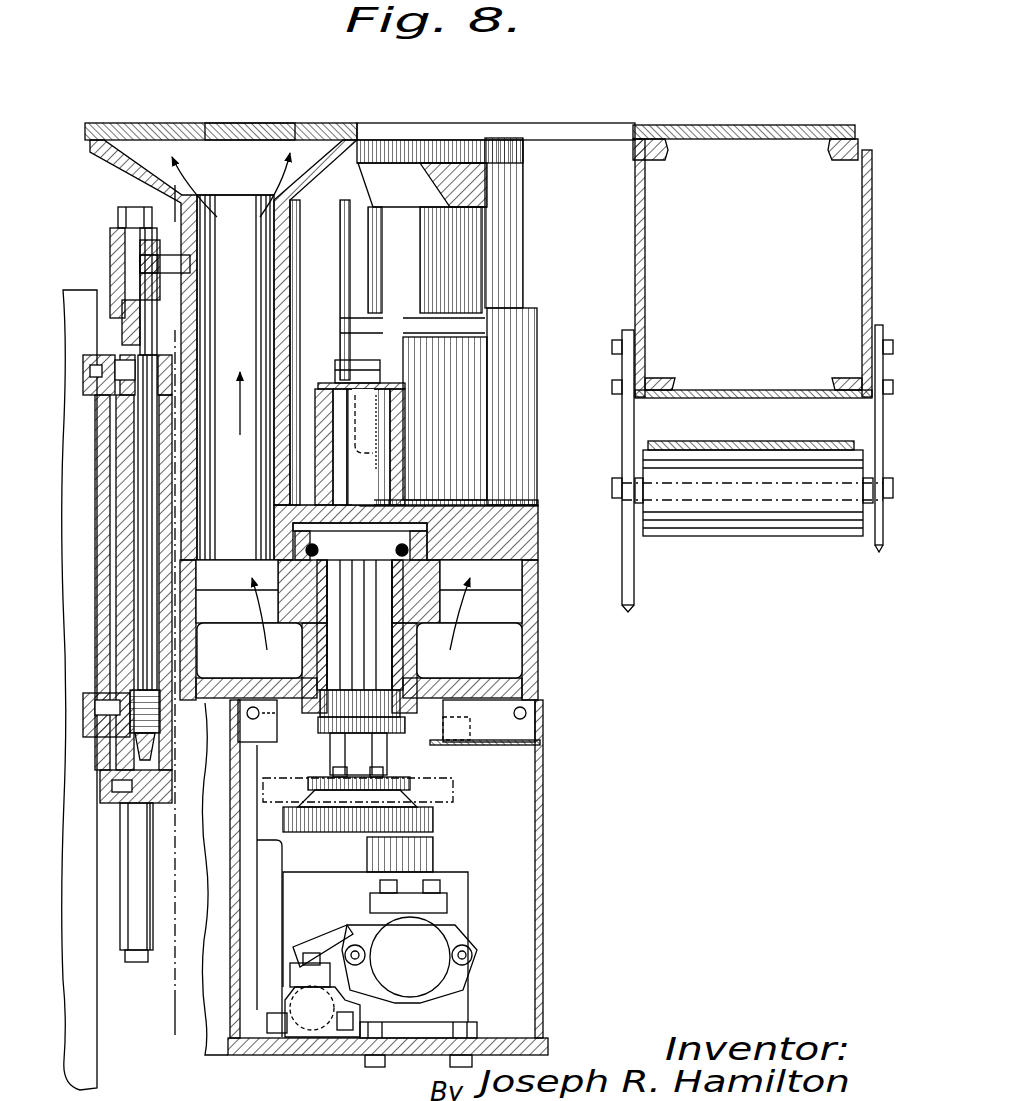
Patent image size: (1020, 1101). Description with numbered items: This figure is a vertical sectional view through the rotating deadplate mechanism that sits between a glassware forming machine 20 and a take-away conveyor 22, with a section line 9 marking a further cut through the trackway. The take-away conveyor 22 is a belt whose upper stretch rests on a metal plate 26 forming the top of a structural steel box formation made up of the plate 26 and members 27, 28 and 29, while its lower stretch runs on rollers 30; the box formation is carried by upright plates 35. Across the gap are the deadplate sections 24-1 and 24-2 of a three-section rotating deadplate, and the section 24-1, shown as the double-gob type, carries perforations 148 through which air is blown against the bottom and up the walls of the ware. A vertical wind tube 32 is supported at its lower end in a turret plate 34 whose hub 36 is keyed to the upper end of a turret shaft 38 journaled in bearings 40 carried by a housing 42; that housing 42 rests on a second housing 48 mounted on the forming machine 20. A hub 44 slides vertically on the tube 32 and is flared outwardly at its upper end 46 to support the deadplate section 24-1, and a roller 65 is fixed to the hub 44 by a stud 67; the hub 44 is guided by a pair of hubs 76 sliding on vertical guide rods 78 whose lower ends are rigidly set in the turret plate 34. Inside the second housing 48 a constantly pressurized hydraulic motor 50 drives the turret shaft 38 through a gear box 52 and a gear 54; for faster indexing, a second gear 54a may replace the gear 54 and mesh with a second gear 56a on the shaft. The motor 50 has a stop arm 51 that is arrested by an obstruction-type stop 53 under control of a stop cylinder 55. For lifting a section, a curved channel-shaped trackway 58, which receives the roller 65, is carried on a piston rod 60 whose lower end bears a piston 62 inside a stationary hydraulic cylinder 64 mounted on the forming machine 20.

The section line 9- 9 is at (125, 198).
The glassware forming machine 20 is at (80, 302).
The take-away conveyor 22 is at (736, 124).
The deadplate section 24-1 is at (180, 124).
The deadplate section 24-2 is at (498, 124).
The metal plate 26 is at (743, 142).
The box formation side member 27 is at (642, 256).
The box formation side member 28 is at (862, 257).
The box formation bottom member 29 is at (691, 392).
The rollers 30 is at (687, 520).
The vertical wind tube 32 is at (236, 212).
The turret plate 34 is at (539, 524).
The upright plates 35 is at (632, 592).
The hub 36 is at (316, 395).
The turret shaft 38 is at (372, 482).
The bearings 40 is at (382, 700).
The housing 42 is at (540, 648).
The hub 44 is at (200, 345).
The flared upper end 46 is at (310, 183).
The second housing 48 is at (512, 860).
The hydraulic motor 50 is at (430, 937).
The stop arm 51 is at (320, 945).
The gear box 52 is at (420, 852).
The obstruction-type stop 53 is at (296, 970).
The gear 54 is at (438, 825).
The second gear 54a is at (455, 782).
The stop cylinder 55 is at (303, 1028).
The second gear 56a is at (425, 770).
The curved channel-shaped trackway 58 is at (112, 274).
The piston rod 60 is at (140, 535).
The piston 62 is at (152, 738).
The stationary hydraulic cylinder 64 is at (162, 636).
The roller 65 is at (160, 250).
The stud 67 is at (185, 267).
The hubs 76 is at (538, 378).
The vertical guide rods 78 is at (522, 246).
The perforations 148 is at (290, 124).